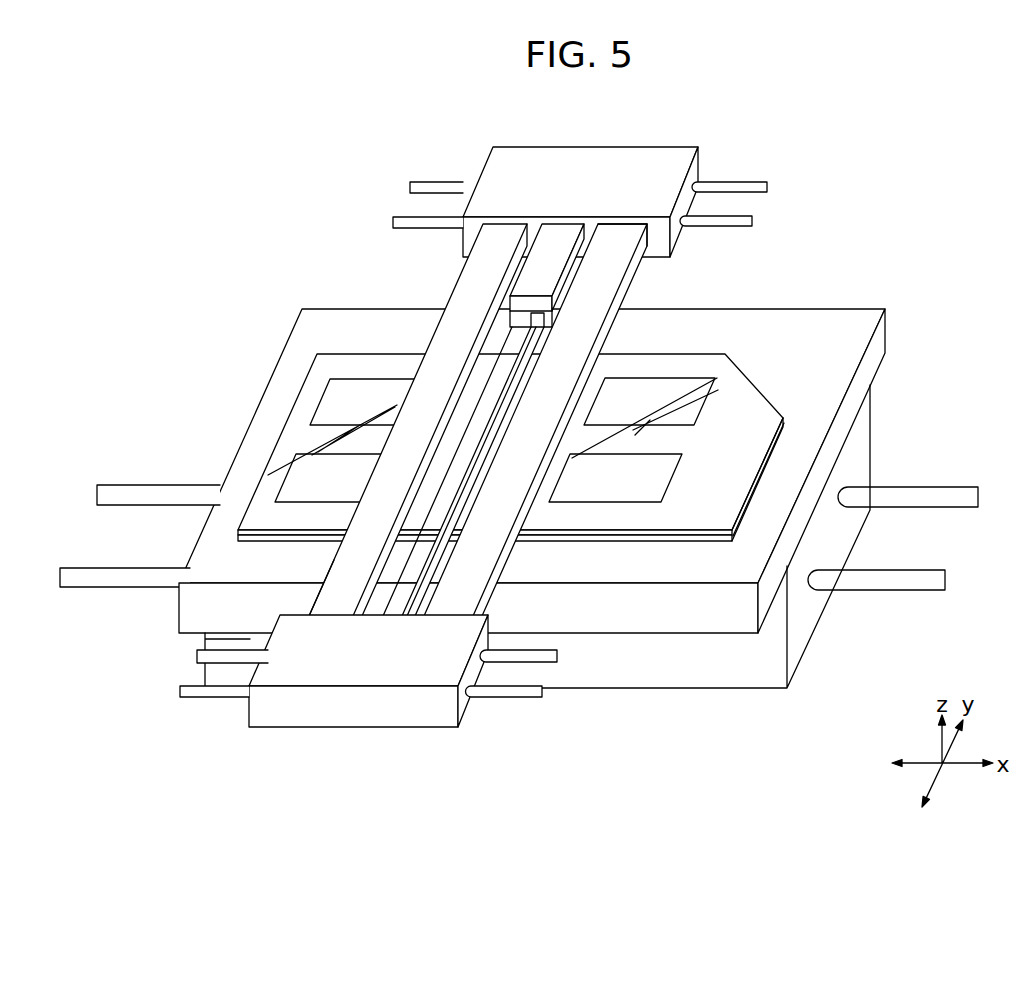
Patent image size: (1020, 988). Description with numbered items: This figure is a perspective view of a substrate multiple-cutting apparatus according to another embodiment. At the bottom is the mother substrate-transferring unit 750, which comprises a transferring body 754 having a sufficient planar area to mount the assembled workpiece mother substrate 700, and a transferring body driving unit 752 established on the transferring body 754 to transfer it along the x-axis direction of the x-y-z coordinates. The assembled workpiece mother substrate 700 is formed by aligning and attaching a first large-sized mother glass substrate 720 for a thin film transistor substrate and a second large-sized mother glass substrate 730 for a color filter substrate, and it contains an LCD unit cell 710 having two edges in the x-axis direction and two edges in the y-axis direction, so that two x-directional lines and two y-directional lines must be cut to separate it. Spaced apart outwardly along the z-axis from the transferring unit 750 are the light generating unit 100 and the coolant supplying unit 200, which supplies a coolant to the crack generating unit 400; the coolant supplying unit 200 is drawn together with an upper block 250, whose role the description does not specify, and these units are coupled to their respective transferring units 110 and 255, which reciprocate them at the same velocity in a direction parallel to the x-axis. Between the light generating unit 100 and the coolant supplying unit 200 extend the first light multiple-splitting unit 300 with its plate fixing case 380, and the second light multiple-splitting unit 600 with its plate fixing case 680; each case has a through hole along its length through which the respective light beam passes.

The light generating unit 100 is at (368, 722).
The transferring unit 110 is at (498, 694).
The coolant supplying unit 200 is at (553, 242).
The second support block 250 is at (651, 152).
The transferring unit 255 is at (740, 181).
The first light multiple-splitting unit 300 is at (646, 281).
The plate fixing case 380 is at (625, 246).
The crack generating unit 400 is at (487, 389).
The second light multiple-splitting unit 600 is at (462, 292).
The plate fixing case 680 is at (325, 591).
The assembled workpiece mother substrate 700 is at (752, 405).
The LCD unit cell 710 is at (685, 382).
The first large-sized mother glass substrate 720 is at (660, 523).
The second large-sized mother glass substrate 730 is at (722, 546).
The mother substrate-transferring unit 750 is at (900, 440).
The transferring body driving unit 752 is at (790, 580).
The transferring body 754 is at (798, 649).